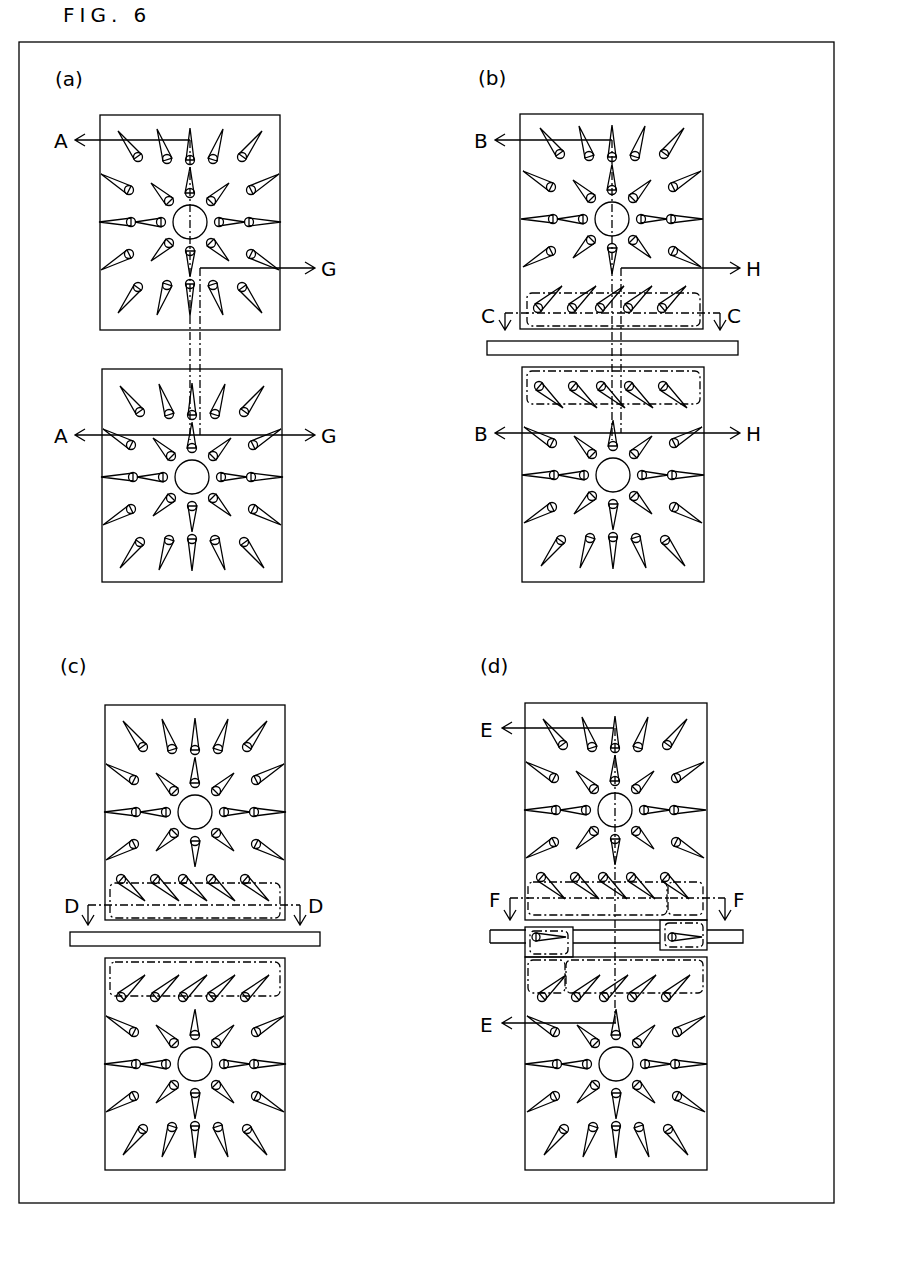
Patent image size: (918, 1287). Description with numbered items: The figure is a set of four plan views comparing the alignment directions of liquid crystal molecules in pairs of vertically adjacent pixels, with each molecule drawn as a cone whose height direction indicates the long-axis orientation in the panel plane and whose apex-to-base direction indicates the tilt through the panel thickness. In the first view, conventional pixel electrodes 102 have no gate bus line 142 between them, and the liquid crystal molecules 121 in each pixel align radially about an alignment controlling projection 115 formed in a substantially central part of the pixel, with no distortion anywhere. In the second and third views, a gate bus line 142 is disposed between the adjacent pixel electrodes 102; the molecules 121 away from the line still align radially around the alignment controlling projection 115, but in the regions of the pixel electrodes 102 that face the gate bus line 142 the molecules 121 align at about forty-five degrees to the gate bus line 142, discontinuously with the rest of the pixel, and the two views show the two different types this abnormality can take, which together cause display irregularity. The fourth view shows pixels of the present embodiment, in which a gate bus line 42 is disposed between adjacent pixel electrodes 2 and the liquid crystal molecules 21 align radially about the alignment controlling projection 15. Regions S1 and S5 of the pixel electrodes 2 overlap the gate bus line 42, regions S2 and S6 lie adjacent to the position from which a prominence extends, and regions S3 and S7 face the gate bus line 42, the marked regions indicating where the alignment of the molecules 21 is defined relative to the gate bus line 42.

The pixel electrode 102 is at (272, 196).
The liquid crystal molecule 121 is at (250, 141).
The alignment controlling projection 115 is at (197, 228).
The gate bus line 142 is at (740, 348).
The pixel electrode 2 is at (697, 785).
The liquid crystal molecule 21 is at (683, 722).
The alignment controlling projection 15 is at (622, 816).
The gate bus line 42 is at (744, 937).
The region S1 is at (528, 950).
The region S2 is at (528, 978).
The region S3 is at (705, 978).
The region S5 is at (707, 945).
The region S6 is at (705, 889).
The region S7 is at (528, 890).